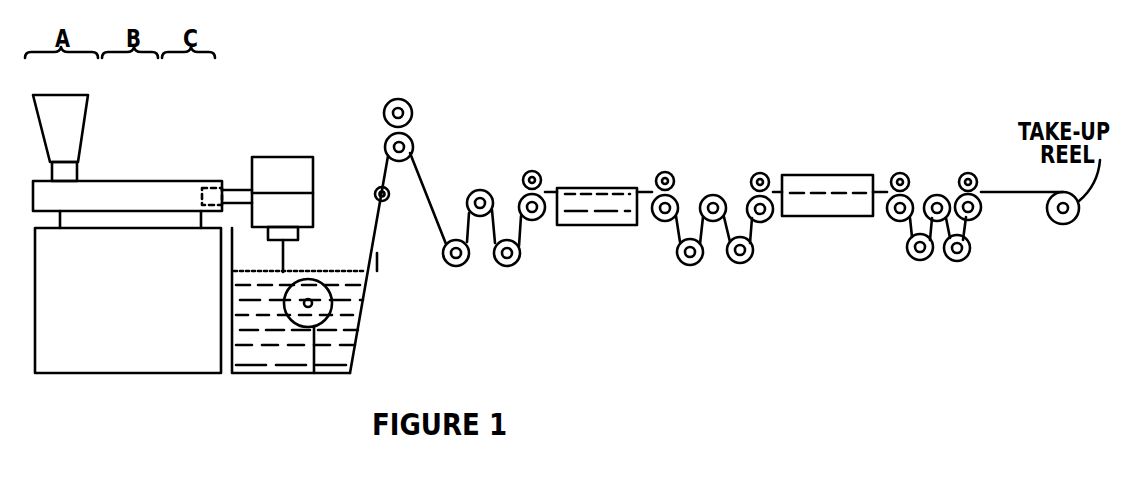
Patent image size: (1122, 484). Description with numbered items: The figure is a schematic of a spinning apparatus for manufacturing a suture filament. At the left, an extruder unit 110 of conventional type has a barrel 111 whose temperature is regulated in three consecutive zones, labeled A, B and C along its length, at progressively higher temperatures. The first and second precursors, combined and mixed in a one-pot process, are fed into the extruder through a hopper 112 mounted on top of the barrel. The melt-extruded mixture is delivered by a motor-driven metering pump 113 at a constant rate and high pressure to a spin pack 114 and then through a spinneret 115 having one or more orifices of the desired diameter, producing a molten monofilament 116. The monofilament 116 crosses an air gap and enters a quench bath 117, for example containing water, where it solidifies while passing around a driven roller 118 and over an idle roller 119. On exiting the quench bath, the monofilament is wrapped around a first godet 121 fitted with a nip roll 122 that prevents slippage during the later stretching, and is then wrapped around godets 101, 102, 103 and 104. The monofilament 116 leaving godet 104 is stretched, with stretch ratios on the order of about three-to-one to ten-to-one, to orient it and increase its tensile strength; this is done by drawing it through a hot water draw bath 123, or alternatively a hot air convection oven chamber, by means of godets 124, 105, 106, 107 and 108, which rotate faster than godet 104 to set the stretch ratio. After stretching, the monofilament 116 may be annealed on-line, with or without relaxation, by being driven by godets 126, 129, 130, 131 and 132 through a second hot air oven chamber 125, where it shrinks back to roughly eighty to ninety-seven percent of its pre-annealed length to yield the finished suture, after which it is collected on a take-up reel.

The godet 101 is at (456, 267).
The godet 102 is at (492, 166).
The godet 103 is at (507, 266).
The godet 104 is at (532, 220).
The godet 105 is at (683, 263).
The godet 106 is at (730, 168).
The godet 107 is at (740, 263).
The godet 108 is at (765, 222).
The extruder unit 110 is at (125, 172).
The barrel 111 is at (163, 192).
The hopper 112 is at (78, 113).
The metering pump 113 is at (298, 170).
The spin pack 114 is at (305, 218).
The spinneret 115 is at (288, 237).
The monofilament 116 is at (282, 254).
The quench bath 117 is at (358, 338).
The driven roller 118 is at (312, 375).
The idle roller 119 is at (390, 196).
The first godet 121 is at (412, 144).
The nip roll 122 is at (401, 100).
The draw bath 123 is at (600, 225).
The godet 124 is at (656, 215).
The second hot air oven chamber 125 is at (826, 216).
The godet 126 is at (903, 222).
The godet 129 is at (910, 260).
The godet 130 is at (937, 195).
The godet 131 is at (957, 262).
The godet 132 is at (975, 220).